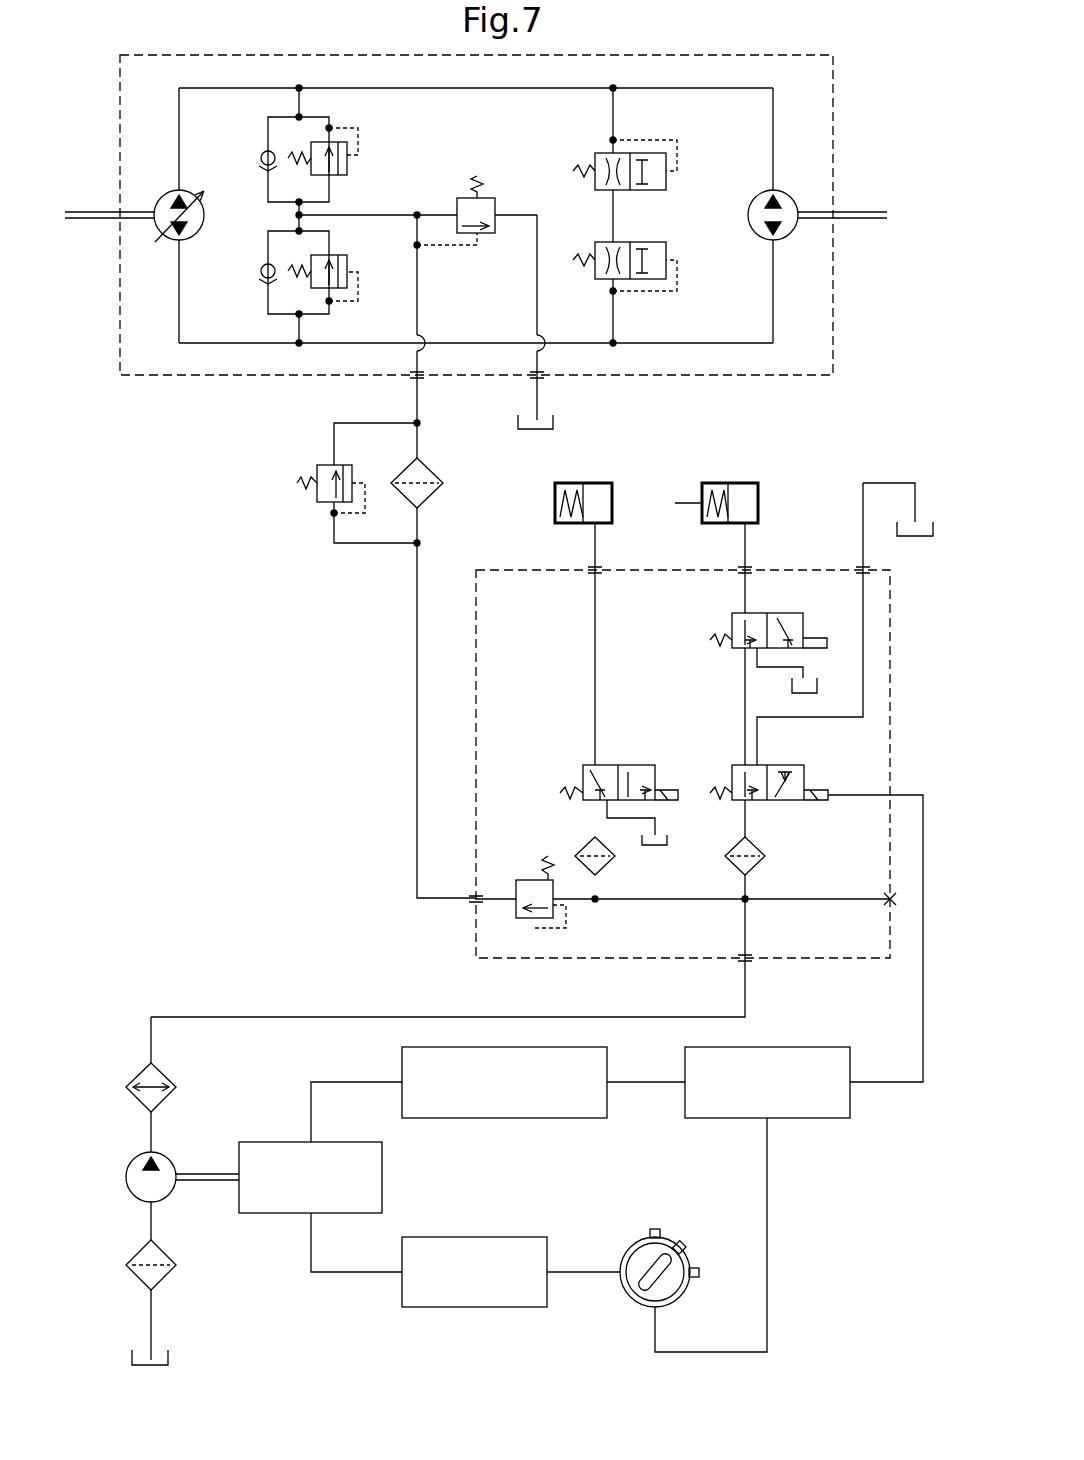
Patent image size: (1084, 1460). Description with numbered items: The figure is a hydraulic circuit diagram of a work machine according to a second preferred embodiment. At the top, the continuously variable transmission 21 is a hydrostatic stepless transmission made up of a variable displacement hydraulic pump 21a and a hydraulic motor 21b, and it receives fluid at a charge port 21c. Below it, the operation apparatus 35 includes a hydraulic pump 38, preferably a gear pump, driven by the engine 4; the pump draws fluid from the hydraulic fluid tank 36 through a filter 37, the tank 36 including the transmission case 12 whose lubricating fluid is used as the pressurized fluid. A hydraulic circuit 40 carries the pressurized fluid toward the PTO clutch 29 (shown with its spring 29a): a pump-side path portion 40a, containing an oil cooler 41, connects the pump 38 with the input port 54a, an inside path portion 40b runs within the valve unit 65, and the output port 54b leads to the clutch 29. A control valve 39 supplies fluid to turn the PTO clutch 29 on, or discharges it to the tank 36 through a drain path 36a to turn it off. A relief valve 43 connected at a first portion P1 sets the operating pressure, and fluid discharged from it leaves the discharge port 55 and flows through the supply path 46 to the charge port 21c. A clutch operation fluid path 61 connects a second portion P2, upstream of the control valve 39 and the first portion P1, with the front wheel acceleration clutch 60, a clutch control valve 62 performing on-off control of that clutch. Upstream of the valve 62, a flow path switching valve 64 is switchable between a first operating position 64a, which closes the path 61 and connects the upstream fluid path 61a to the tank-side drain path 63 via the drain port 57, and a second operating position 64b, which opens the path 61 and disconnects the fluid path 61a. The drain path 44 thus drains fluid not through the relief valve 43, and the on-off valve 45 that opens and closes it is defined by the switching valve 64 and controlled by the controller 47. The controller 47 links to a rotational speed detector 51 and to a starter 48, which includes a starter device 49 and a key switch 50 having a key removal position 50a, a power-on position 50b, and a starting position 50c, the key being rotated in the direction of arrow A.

The continuously variable transmission 21 is at (492, 234).
The variable displacement hydraulic pump 21a is at (165, 197).
The hydraulic motor 21b is at (792, 195).
The charge port 21c is at (415, 388).
The operation apparatus 35 is at (374, 712).
The supply path 46 is at (417, 808).
The filter 37 is at (612, 866).
The hydraulic fluid tank 36 is at (533, 876).
The transmission case 12 is at (170, 1358).
The valve unit 65 is at (470, 602).
The PTO clutch 29 is at (568, 483).
The spring 29a is at (558, 500).
The output port 54b is at (593, 567).
The front wheel acceleration clutch 60 is at (750, 483).
The drain port 57 is at (860, 567).
The clutch control valve 62 is at (793, 612).
The clutch operation fluid path 61 is at (743, 682).
The drain path 44 is at (843, 750).
The tank-side drain path 63 is at (865, 664).
The fluid path 61a is at (750, 825).
The control valve 39 is at (608, 765).
The drain path 36a is at (658, 818).
The flow path switching valve 64 is at (797, 897).
The on-off valve 45 is at (732, 775).
The first operating position 64a is at (808, 780).
The second operating position 64b is at (765, 765).
The hydraulic circuit 40 is at (523, 946).
The pump-side path portion 40a is at (268, 1017).
The inside path portion 40b is at (620, 902).
The relief valve 43 is at (530, 880).
The discharge port 55 is at (473, 905).
The first portion P1 is at (595, 905).
The second portion P2 is at (748, 905).
The input port 54a is at (750, 962).
The oil cooler 41 is at (135, 1075).
The hydraulic pump 38 is at (130, 1162).
The engine 4 is at (272, 1140).
The rotational speed detector 51 is at (535, 1118).
The controller 47 is at (797, 1118).
The starter 48 is at (570, 1264).
The starter device 49 is at (447, 1307).
The key switch 50 is at (667, 1254).
The key removal position 50a is at (700, 1275).
The power-on position 50b is at (689, 1247).
The starting position 50c is at (655, 1228).
The arrow A is at (638, 1235).